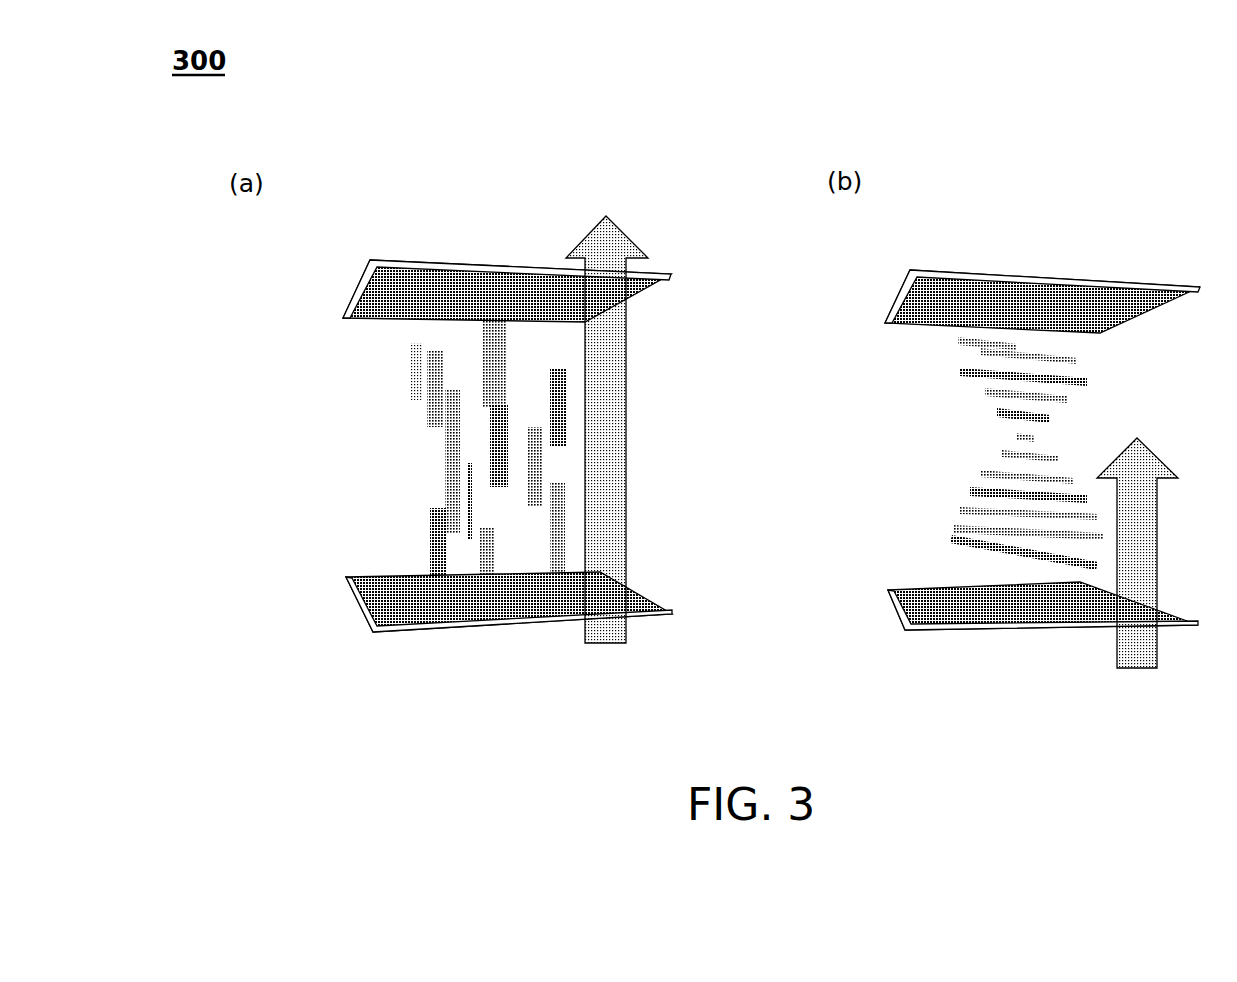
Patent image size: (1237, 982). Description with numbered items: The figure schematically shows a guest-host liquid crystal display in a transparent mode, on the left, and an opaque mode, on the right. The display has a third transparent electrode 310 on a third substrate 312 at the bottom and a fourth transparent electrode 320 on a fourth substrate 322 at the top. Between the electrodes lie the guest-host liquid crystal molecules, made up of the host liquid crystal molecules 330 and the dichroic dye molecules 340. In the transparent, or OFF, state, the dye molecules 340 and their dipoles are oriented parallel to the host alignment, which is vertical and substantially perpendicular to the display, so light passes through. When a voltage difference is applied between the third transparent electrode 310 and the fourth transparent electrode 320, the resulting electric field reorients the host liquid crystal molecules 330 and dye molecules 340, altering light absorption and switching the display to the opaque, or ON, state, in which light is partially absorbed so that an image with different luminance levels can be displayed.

The third transparent electrode 310 is at (375, 590).
The third substrate 312 is at (373, 632).
The fourth transparent electrode 320 is at (403, 308).
The fourth substrate 322 is at (446, 262).
The host liquid crystal molecules 330 is at (428, 378).
The dye molecules 340 is at (430, 568).